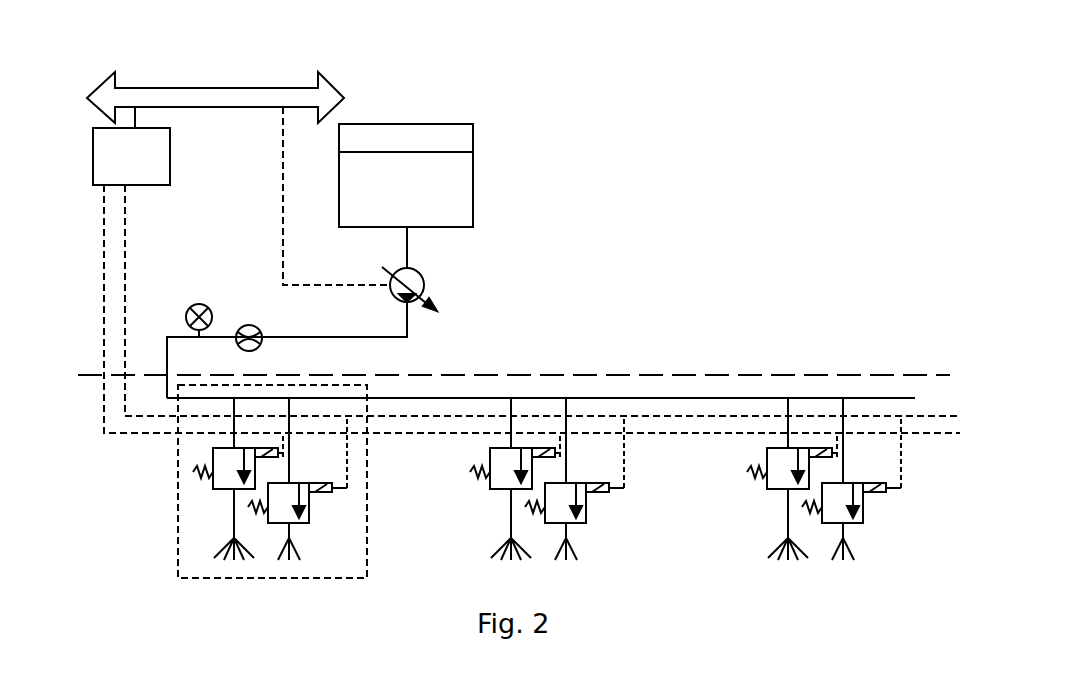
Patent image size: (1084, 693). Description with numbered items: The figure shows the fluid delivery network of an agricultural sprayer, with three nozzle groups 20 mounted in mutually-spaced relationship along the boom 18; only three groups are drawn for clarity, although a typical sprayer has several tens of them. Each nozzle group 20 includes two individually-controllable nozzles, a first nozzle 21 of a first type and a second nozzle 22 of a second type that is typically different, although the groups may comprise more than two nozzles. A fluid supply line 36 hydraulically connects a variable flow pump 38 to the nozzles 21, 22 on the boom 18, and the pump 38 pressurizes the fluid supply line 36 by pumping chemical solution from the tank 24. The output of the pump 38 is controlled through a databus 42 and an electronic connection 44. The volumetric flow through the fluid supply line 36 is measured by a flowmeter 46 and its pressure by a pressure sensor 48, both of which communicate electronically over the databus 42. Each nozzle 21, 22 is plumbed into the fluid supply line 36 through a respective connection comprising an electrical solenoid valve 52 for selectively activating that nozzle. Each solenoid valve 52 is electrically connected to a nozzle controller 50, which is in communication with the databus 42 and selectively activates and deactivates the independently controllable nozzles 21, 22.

The boom 18 is at (842, 375).
The nozzle group 20 is at (333, 578).
The first nozzle 21 is at (213, 480).
The second nozzle 22 is at (309, 505).
The tank 24 is at (473, 168).
The fluid supply line 36 is at (700, 398).
The variable flow pump 38 is at (420, 273).
The databus 42 is at (210, 88).
The electronic connection 44 is at (283, 158).
The flowmeter 46 is at (250, 325).
The pressure sensor 48 is at (200, 304).
The nozzle controller 50 is at (93, 157).
The electrical solenoid valve 52 is at (324, 483).